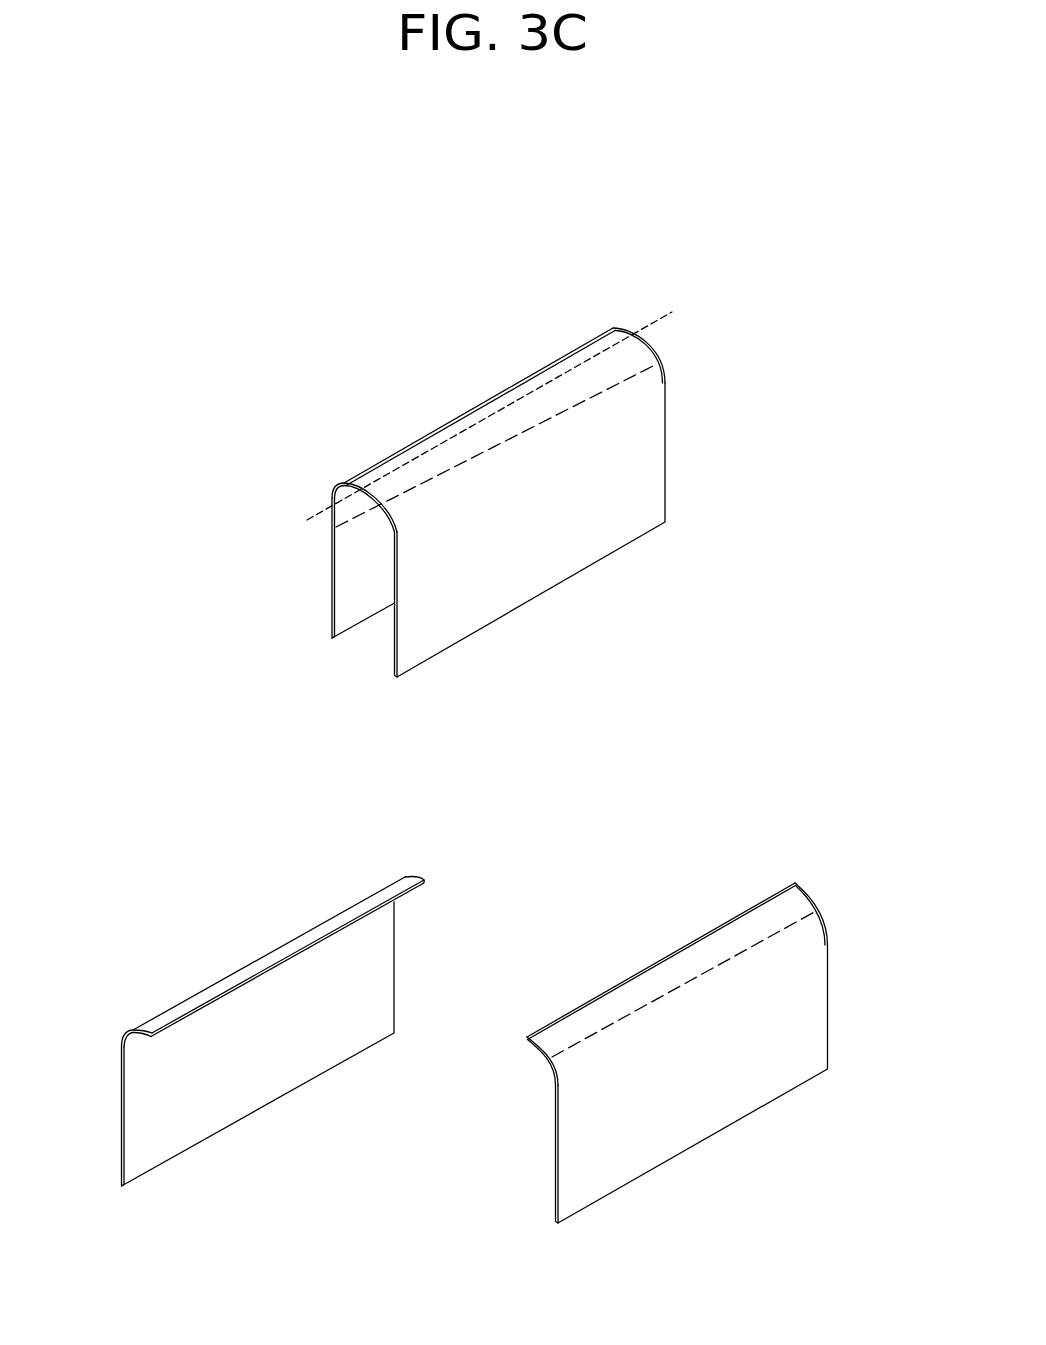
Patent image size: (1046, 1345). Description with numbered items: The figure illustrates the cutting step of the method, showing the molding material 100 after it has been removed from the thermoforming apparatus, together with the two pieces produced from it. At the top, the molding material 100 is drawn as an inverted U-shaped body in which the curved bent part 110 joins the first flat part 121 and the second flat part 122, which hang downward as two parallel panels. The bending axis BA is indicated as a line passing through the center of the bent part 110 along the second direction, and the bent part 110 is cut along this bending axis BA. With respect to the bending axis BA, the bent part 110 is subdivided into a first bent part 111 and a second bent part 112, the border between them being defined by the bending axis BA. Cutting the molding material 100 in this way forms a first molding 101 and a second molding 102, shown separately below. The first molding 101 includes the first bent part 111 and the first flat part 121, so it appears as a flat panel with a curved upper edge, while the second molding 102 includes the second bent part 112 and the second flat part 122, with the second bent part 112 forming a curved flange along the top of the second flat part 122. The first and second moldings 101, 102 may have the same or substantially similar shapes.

The molding material 100 is at (735, 283).
The first molding 101 is at (826, 864).
The second molding 102 is at (287, 874).
The bent part 110 is at (495, 335).
The first bent part 111 is at (470, 447).
The second bent part 112 is at (420, 447).
The first flat part 121 is at (487, 593).
The second flat part 122 is at (332, 595).
The bending axis BA is at (657, 317).